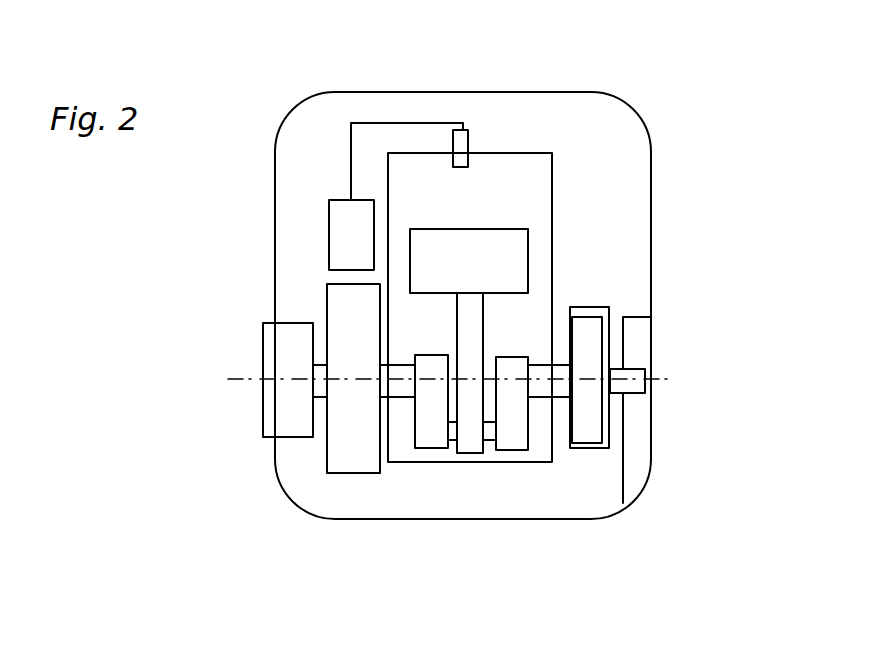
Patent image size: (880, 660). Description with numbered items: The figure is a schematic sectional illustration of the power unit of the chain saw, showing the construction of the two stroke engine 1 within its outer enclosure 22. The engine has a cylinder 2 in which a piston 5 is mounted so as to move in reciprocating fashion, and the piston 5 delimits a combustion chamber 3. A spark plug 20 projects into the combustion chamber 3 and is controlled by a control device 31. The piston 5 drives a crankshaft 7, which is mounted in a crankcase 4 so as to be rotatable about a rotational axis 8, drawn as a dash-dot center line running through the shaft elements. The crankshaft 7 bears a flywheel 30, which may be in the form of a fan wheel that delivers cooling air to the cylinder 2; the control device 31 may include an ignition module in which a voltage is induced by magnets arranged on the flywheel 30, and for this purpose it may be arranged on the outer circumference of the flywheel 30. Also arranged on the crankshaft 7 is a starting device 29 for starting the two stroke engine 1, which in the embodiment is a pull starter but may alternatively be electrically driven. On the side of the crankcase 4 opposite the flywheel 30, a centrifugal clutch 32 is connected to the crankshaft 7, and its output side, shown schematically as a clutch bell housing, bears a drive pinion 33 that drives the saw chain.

The two stroke engine 1 is at (512, 153).
The cylinder 2 is at (552, 197).
The combustion chamber 3 is at (465, 208).
The crankcase 4 is at (440, 462).
The piston 5 is at (512, 262).
The crankshaft 7 is at (510, 430).
The rotational axis 8 is at (238, 378).
The spark plug 20 is at (465, 143).
The enclosure 22 is at (345, 90).
The starting device 29 is at (275, 413).
The flywheel 30 is at (342, 458).
The control device 31 is at (335, 239).
The centrifugal clutch 32 is at (593, 443).
The drive pinion 33 is at (637, 395).